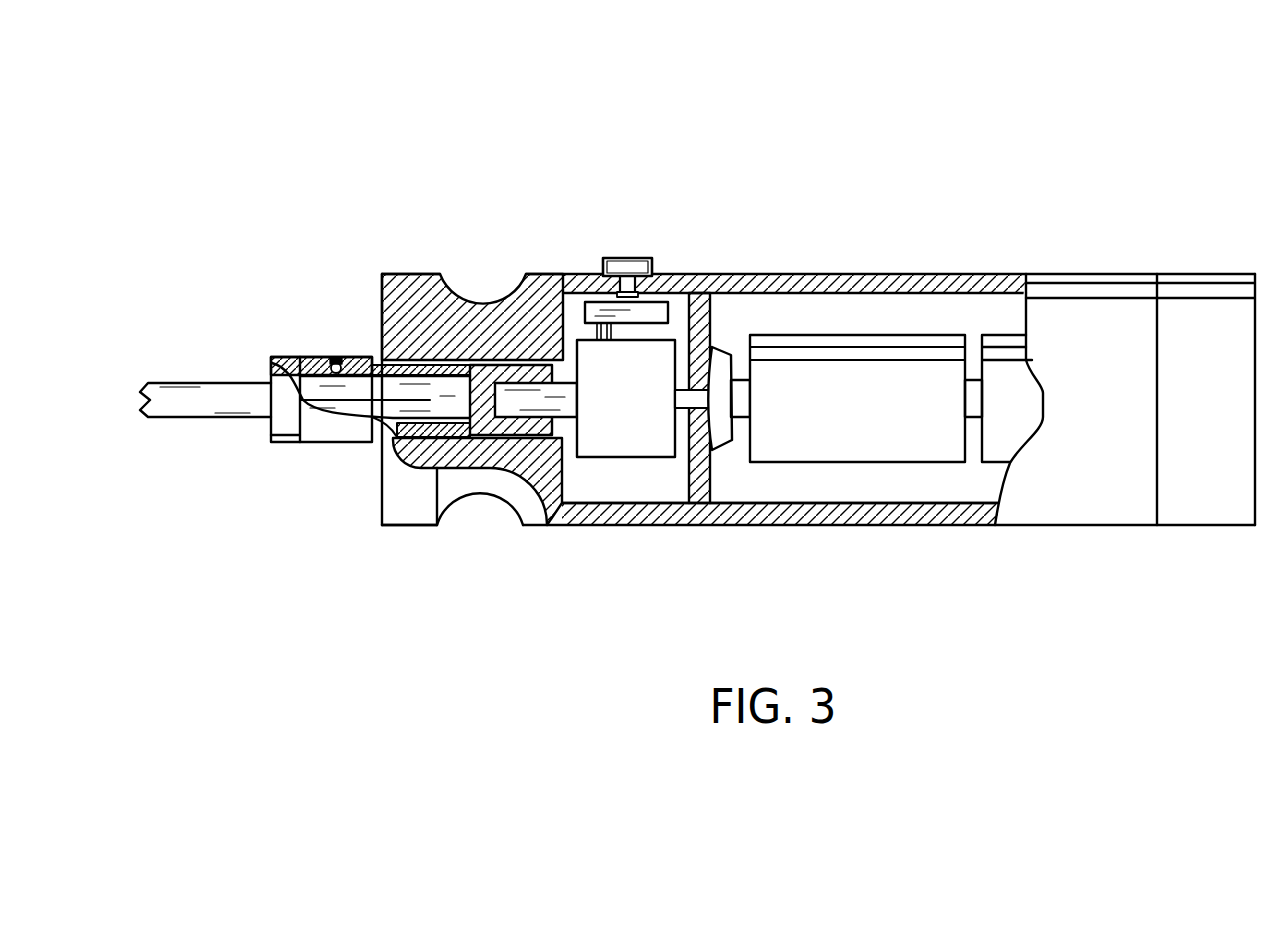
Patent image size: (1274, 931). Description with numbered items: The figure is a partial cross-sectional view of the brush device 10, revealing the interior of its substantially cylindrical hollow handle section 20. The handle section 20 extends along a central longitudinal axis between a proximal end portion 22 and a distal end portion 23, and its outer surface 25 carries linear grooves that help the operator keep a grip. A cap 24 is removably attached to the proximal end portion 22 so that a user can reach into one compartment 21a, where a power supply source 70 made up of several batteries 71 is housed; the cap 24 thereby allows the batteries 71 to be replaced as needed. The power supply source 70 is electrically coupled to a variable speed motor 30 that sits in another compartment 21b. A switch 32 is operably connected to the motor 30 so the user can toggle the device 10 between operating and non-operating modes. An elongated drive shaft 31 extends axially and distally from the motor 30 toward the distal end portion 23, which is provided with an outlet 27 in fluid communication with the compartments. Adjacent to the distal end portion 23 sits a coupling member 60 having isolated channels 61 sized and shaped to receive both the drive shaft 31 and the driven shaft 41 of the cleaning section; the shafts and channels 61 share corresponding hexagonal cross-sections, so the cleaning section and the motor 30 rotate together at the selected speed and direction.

The device 10 is at (890, 142).
The hollow handle section 20 is at (478, 302).
The compartment 21a is at (824, 503).
The compartment 21b is at (594, 500).
The proximal end portion 22 is at (1115, 274).
The distal end portion 23 is at (400, 527).
The cap 24 is at (1187, 525).
The outer surface 25 is at (702, 274).
The outlet 27 is at (362, 362).
The variable speed motor 30 is at (650, 458).
The drive shaft 31 is at (510, 385).
The switch 32 is at (636, 258).
The driven shaft 41 is at (180, 384).
The coupling member 60 is at (327, 442).
The isolated channels 61 is at (318, 356).
The power supply source 70 is at (717, 347).
The batteries 71 is at (823, 335).